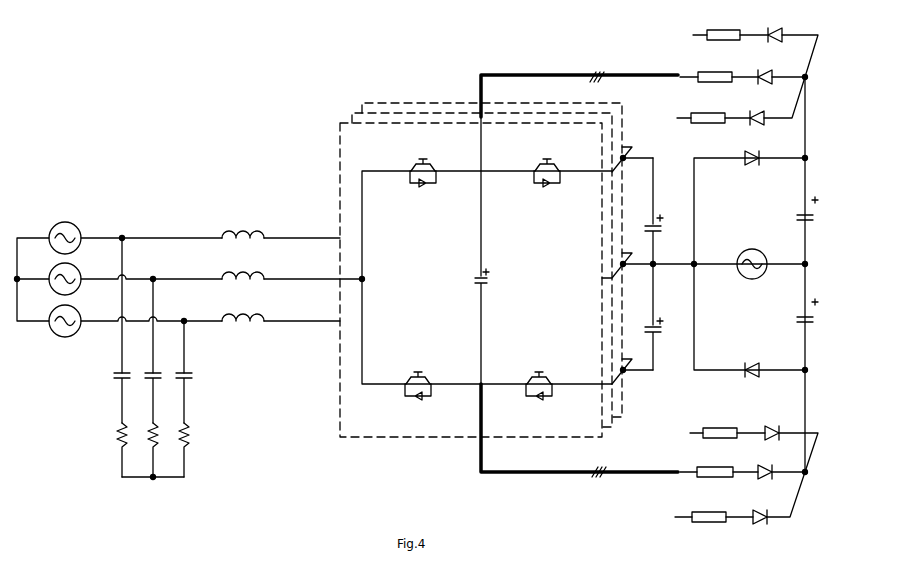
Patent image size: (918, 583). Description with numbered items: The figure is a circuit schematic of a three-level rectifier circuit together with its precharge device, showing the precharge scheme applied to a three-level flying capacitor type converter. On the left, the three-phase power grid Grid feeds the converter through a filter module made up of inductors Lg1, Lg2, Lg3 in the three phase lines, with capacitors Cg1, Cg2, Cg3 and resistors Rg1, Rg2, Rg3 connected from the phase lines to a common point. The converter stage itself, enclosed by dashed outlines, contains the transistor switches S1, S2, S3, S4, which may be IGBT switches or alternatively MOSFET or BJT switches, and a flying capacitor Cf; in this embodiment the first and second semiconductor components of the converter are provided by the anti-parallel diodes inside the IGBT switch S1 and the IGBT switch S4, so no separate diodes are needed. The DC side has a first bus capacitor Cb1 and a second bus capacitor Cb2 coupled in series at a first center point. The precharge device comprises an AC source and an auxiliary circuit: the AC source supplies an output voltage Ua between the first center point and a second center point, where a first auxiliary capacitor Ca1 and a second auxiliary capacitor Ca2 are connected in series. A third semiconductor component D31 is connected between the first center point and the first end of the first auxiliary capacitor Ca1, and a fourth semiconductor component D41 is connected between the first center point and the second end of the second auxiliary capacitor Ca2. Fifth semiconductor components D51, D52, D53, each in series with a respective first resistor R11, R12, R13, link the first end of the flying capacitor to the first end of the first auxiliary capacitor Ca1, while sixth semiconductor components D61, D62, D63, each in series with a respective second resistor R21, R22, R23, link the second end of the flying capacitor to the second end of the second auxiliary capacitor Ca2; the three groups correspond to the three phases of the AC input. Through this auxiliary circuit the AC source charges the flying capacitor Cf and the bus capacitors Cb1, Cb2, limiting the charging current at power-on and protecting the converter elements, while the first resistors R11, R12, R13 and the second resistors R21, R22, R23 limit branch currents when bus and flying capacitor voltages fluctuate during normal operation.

The power grid Grid is at (48, 272).
The inductor Lg1 is at (243, 308).
The inductor Lg2 is at (243, 266).
The inductor Lg3 is at (243, 224).
The capacitor Cg1 is at (193, 390).
The capacitor Cg2 is at (162, 390).
The capacitor Cg3 is at (131, 390).
The resistor Rg1 is at (194, 445).
The resistor Rg2 is at (163, 445).
The resistor Rg3 is at (132, 445).
The IGBT switch S1 is at (547, 182).
The IGBT switch S2 is at (423, 182).
The IGBT switch S3 is at (418, 378).
The IGBT switch S4 is at (539, 378).
The flying capacitor Cf is at (489, 249).
The first bus capacitor Cb1 is at (643, 211).
The second bus capacitor Cb2 is at (643, 317).
The output voltage Ua is at (752, 258).
The first auxiliary capacitor Ca1 is at (797, 208).
The second auxiliary capacitor Ca2 is at (797, 310).
The third semiconductor component D31 is at (752, 152).
The fourth semiconductor component D41 is at (752, 364).
The first resistor R11 is at (708, 111).
The first resistor R12 is at (715, 69).
The first resistor R13 is at (723, 28).
The fifth semiconductor component D51 is at (756, 112).
The fifth semiconductor component D52 is at (764, 70).
The fifth semiconductor component D53 is at (774, 29).
The second resistor R21 is at (709, 511).
The second resistor R22 is at (715, 466).
The second resistor R23 is at (720, 427).
The sixth semiconductor component D61 is at (758, 512).
The sixth semiconductor component D62 is at (764, 467).
The sixth semiconductor component D63 is at (770, 428).